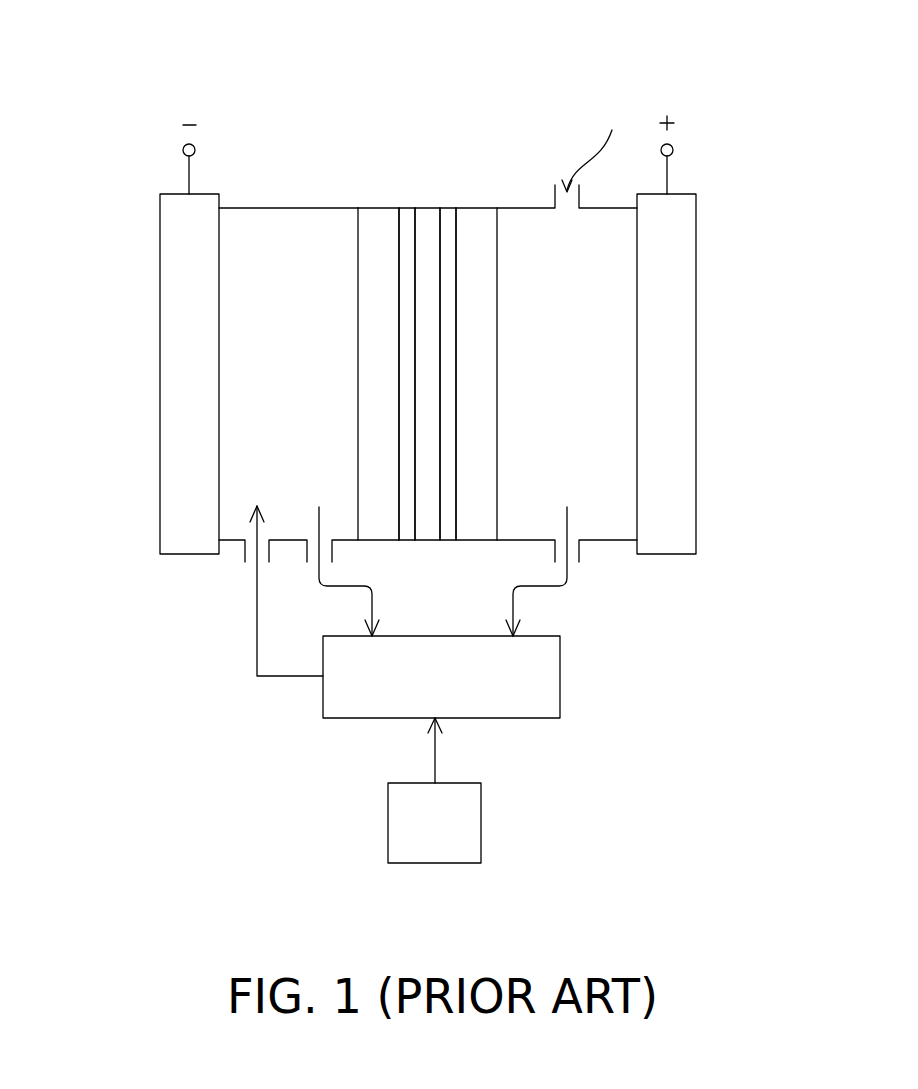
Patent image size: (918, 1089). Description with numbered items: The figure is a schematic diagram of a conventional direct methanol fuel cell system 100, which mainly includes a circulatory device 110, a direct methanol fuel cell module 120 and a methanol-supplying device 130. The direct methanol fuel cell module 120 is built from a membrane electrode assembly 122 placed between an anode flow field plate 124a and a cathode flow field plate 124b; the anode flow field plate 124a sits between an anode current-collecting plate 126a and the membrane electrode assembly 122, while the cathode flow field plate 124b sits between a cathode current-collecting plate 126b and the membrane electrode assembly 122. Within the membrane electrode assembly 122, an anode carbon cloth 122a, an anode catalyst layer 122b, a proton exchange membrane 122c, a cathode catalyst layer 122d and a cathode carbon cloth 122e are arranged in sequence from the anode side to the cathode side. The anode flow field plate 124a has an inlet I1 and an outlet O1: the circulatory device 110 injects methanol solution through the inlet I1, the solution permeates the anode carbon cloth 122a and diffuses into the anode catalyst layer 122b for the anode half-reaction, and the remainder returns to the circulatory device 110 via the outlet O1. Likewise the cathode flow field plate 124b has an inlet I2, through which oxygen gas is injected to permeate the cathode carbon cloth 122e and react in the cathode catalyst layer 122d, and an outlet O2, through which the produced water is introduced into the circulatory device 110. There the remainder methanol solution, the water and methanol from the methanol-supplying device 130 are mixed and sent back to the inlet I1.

The direct methanol fuel cell system 100 is at (652, 913).
The direct methanol fuel cell module 120 is at (701, 577).
The membrane electrode assembly 122 is at (602, 38).
The anode carbon cloth 122a is at (378, 228).
The anode catalyst layer 122b is at (410, 220).
The proton exchange membrane 122c is at (427, 220).
The cathode catalyst layer 122d is at (447, 220).
The cathode carbon cloth 122e is at (477, 220).
The anode flow field plate 124a is at (276, 243).
The cathode flow field plate 124b is at (606, 230).
The anode current-collecting plate 126a is at (182, 217).
The cathode current-collecting plate 126b is at (670, 212).
The circulatory device 110 is at (560, 672).
The methanol-supplying device 130 is at (481, 820).
The inlet I1 is at (255, 569).
The inlet I2 is at (593, 144).
The outlet O1 is at (323, 556).
The outlet O2 is at (571, 556).